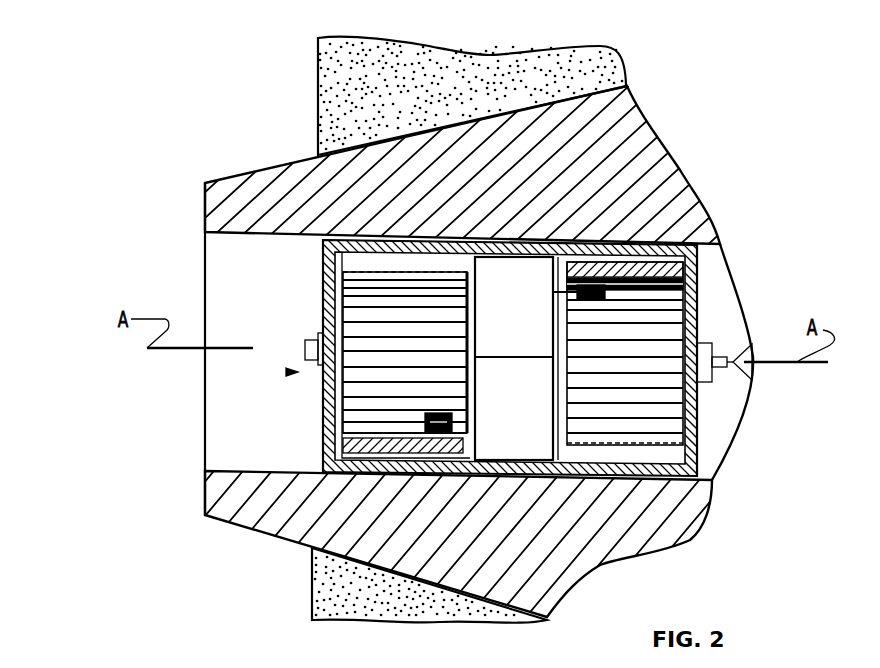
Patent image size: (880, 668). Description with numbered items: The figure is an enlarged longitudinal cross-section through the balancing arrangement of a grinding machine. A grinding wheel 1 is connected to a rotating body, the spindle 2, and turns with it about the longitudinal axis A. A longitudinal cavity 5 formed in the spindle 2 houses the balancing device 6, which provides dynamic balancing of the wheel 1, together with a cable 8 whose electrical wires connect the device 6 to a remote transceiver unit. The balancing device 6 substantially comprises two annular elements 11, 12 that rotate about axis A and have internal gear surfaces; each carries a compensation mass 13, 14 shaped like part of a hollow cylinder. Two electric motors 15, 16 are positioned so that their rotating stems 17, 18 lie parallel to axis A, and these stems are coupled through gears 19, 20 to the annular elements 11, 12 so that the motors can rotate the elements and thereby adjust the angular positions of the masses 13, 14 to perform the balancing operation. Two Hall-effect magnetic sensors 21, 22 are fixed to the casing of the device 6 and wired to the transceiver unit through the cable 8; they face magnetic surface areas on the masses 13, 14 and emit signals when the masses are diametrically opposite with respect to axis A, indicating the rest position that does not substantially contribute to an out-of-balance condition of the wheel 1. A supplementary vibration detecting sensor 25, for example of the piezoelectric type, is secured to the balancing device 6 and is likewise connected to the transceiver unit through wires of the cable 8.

The grinding wheel 1 is at (447, 330).
The spindle 2 is at (483, 167).
The longitudinal cavity 5 is at (425, 231).
The balancing device 6 is at (198, 364).
The cable 8 is at (745, 373).
The annular element 11 is at (309, 343).
The annular element 12 is at (671, 353).
The compensation mass 13 is at (451, 535).
The compensation mass 14 is at (719, 304).
The electric motor 15 is at (618, 455).
The electric motor 16 is at (570, 270).
The rotating stem 17 is at (309, 400).
The rotating stem 18 is at (674, 303).
The gear 19 is at (295, 413).
The gear 20 is at (658, 287).
The sensor 21 is at (315, 446).
The sensor 22 is at (656, 246).
The supplementary vibration detecting sensor 25 is at (228, 320).